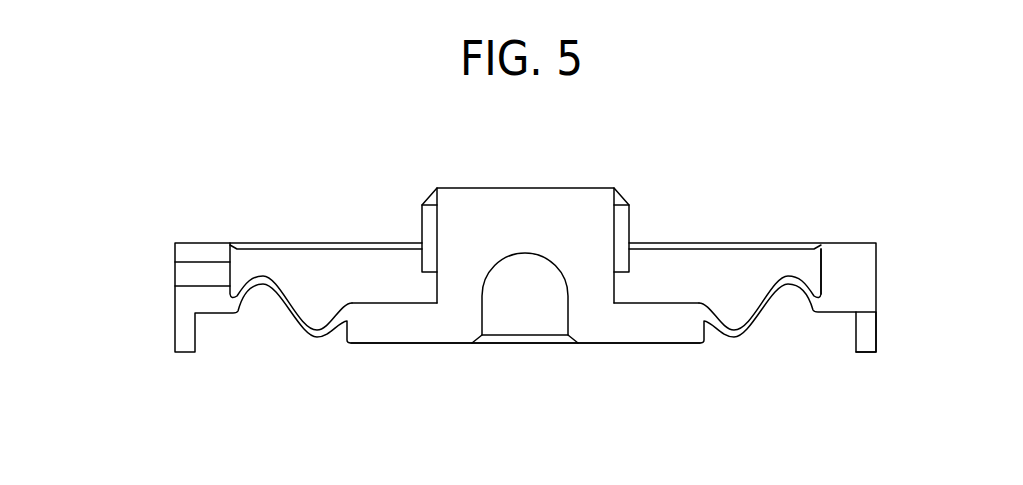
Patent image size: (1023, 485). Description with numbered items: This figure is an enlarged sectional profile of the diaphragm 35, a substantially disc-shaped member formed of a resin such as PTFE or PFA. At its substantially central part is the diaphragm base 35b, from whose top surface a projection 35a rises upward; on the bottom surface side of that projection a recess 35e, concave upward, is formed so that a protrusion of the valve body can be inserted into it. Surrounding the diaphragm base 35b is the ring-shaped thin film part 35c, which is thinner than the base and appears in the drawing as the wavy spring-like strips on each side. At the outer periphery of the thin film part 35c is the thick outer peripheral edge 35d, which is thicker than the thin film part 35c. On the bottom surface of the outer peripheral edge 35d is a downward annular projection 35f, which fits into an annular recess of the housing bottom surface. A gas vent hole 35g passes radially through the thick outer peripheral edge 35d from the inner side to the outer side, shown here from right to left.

The diaphragm 35 is at (856, 238).
The projection 35a is at (623, 220).
The diaphragm base 35b is at (604, 332).
The thin film part 35c is at (740, 336).
The outer peripheral edge 35d is at (867, 277).
The recess 35e is at (523, 307).
The annular projection 35f is at (867, 332).
The gas vent hole 35g is at (197, 262).